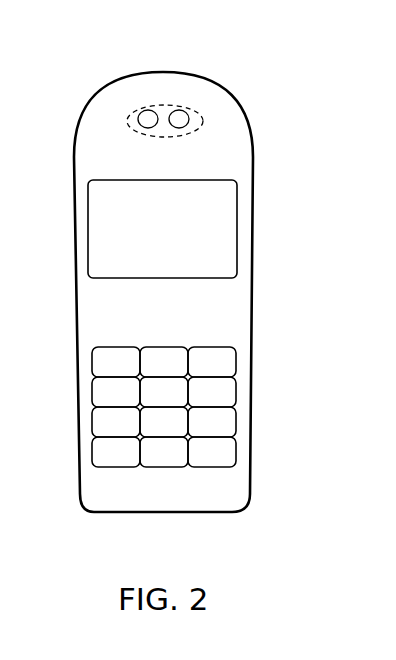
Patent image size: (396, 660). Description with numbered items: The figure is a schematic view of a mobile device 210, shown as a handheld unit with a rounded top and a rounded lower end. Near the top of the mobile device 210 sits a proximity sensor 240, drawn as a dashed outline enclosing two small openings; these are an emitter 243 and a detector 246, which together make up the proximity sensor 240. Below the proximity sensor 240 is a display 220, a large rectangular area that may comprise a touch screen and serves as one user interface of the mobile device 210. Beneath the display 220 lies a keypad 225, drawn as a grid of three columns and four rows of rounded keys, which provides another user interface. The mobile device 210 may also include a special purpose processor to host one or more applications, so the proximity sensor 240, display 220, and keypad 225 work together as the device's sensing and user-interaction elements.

The mobile device 210 is at (157, 71).
The display 220 is at (157, 279).
The keypad 225 is at (207, 400).
The proximity sensor 240 is at (175, 137).
The emitter 243 is at (138, 119).
The detector 246 is at (189, 119).